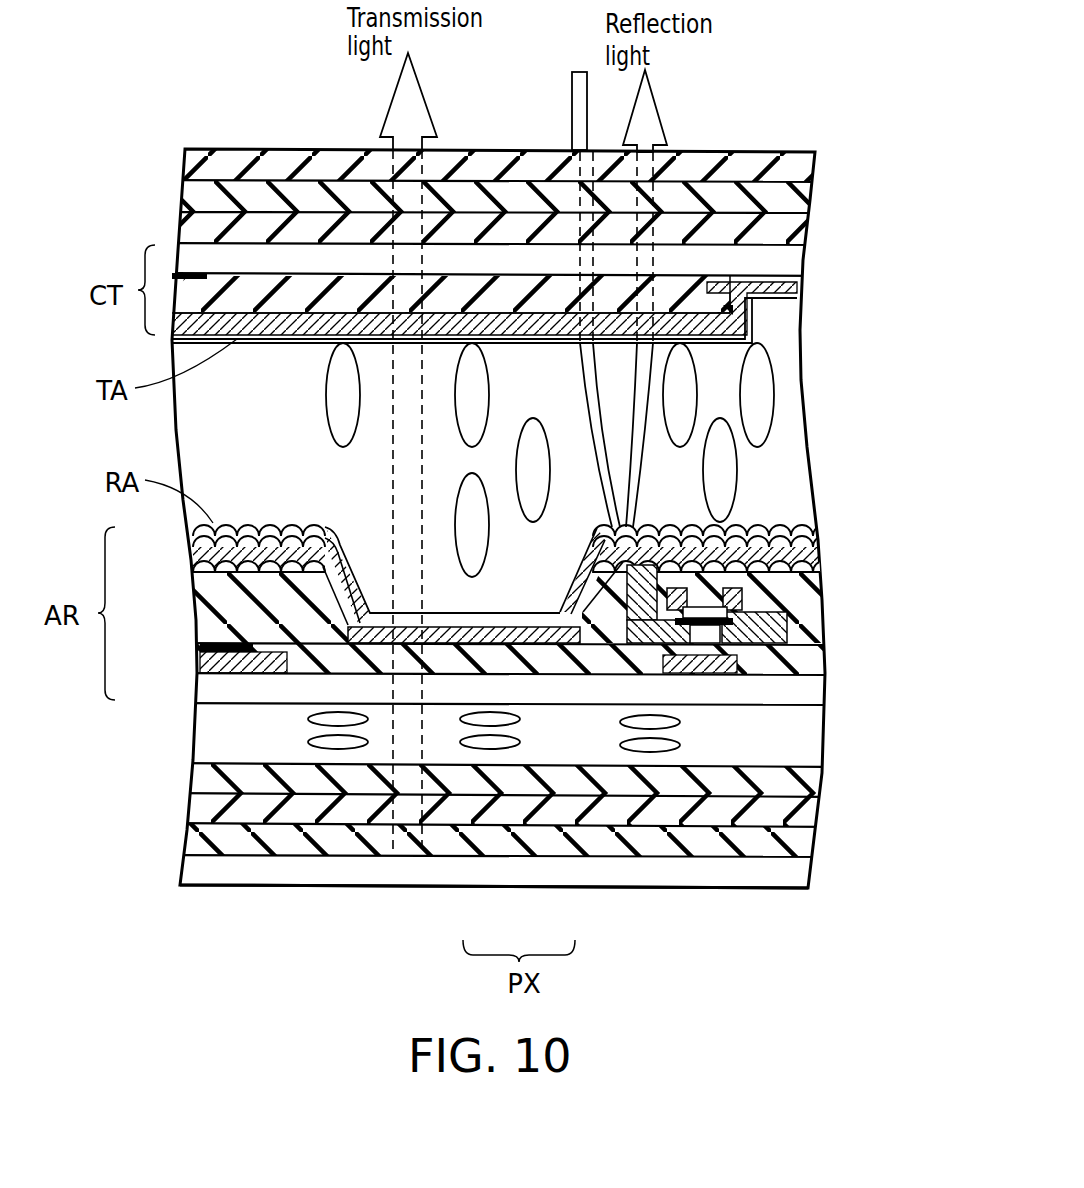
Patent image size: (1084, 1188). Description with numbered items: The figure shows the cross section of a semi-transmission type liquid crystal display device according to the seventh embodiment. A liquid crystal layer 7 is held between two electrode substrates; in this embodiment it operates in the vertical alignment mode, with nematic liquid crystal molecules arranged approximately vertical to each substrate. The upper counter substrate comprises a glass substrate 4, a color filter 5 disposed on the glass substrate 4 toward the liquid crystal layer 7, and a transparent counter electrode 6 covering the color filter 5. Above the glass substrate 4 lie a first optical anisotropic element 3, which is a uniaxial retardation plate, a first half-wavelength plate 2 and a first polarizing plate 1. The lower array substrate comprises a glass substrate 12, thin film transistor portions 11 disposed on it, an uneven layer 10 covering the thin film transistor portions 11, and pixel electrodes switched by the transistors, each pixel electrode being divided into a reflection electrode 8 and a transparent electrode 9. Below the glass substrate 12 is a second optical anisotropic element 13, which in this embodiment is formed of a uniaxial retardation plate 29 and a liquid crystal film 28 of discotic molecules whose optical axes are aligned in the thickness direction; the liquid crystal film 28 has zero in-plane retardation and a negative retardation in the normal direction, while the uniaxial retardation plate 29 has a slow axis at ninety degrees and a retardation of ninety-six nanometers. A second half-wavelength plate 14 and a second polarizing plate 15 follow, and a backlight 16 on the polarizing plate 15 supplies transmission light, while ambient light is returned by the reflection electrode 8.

The first polarizing plate 1 is at (333, 163).
The first half-wavelength plate 2 is at (813, 190).
The first optical anisotropic element 3 is at (792, 233).
The glass substrate 4 is at (231, 192).
The color filter 5 is at (688, 290).
The transparent counter electrode 6 is at (743, 305).
The liquid crystal layer 7 is at (785, 410).
The reflection electrode 8 is at (612, 550).
The transparent electrode 9 is at (482, 637).
The uneven layer 10 is at (213, 603).
The thin film transistor portion 11 is at (797, 591).
The glass substrate 12 is at (210, 688).
The second optical anisotropic element 13 is at (558, 747).
The second half-wavelength plate 14 is at (818, 817).
The second polarizing plate 15 is at (805, 852).
The backlight 16 is at (802, 875).
The liquid crystal film 28 is at (812, 745).
The uniaxial retardation plate 29 is at (526, 771).